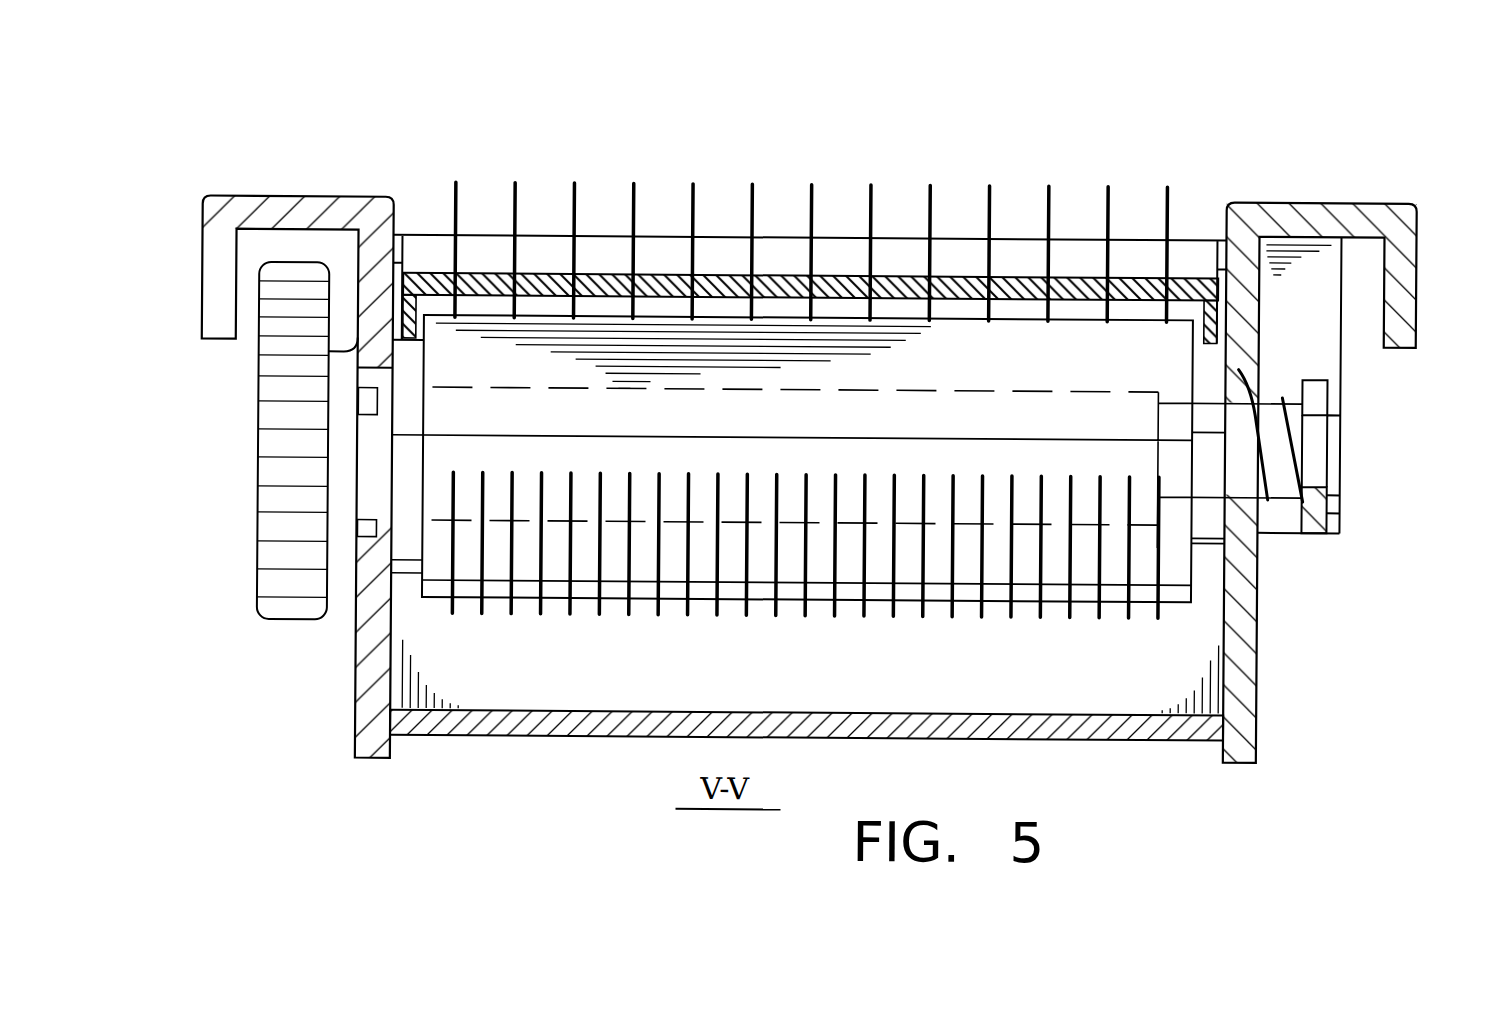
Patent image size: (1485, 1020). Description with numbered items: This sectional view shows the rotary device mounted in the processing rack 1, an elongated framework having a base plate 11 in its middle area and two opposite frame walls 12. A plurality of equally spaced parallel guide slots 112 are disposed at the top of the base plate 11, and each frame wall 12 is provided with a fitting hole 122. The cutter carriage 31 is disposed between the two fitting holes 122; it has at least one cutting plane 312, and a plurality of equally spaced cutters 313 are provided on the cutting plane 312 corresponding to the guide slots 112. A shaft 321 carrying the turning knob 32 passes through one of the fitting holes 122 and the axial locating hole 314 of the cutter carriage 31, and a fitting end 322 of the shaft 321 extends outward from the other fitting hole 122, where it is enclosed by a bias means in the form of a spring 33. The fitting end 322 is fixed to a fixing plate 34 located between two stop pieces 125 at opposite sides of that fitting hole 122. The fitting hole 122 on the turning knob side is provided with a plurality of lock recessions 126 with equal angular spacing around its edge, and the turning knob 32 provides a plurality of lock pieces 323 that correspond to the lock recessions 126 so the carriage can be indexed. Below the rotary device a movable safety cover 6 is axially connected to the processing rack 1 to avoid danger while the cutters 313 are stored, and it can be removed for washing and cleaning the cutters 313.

The processing rack 1 is at (370, 190).
The safety cover 6 is at (1182, 733).
The base plate 11 is at (431, 235).
The frame wall 12 is at (305, 216).
The guide slot 112 is at (836, 283).
The fitting hole 122 is at (1247, 496).
The stop piece 125 is at (1333, 389).
The lock recession 126 is at (363, 532).
The cutter carriage 31 is at (1183, 565).
The cutting plane 312 is at (1072, 316).
The cutter 313 is at (515, 213).
The axial locating hole 314 is at (521, 521).
The shaft 321 is at (640, 521).
The turning knob 32 is at (272, 580).
The fitting end 322 is at (1250, 384).
The lock piece 323 is at (362, 399).
The spring 33 is at (1307, 442).
The fixing plate 34 is at (1317, 511).